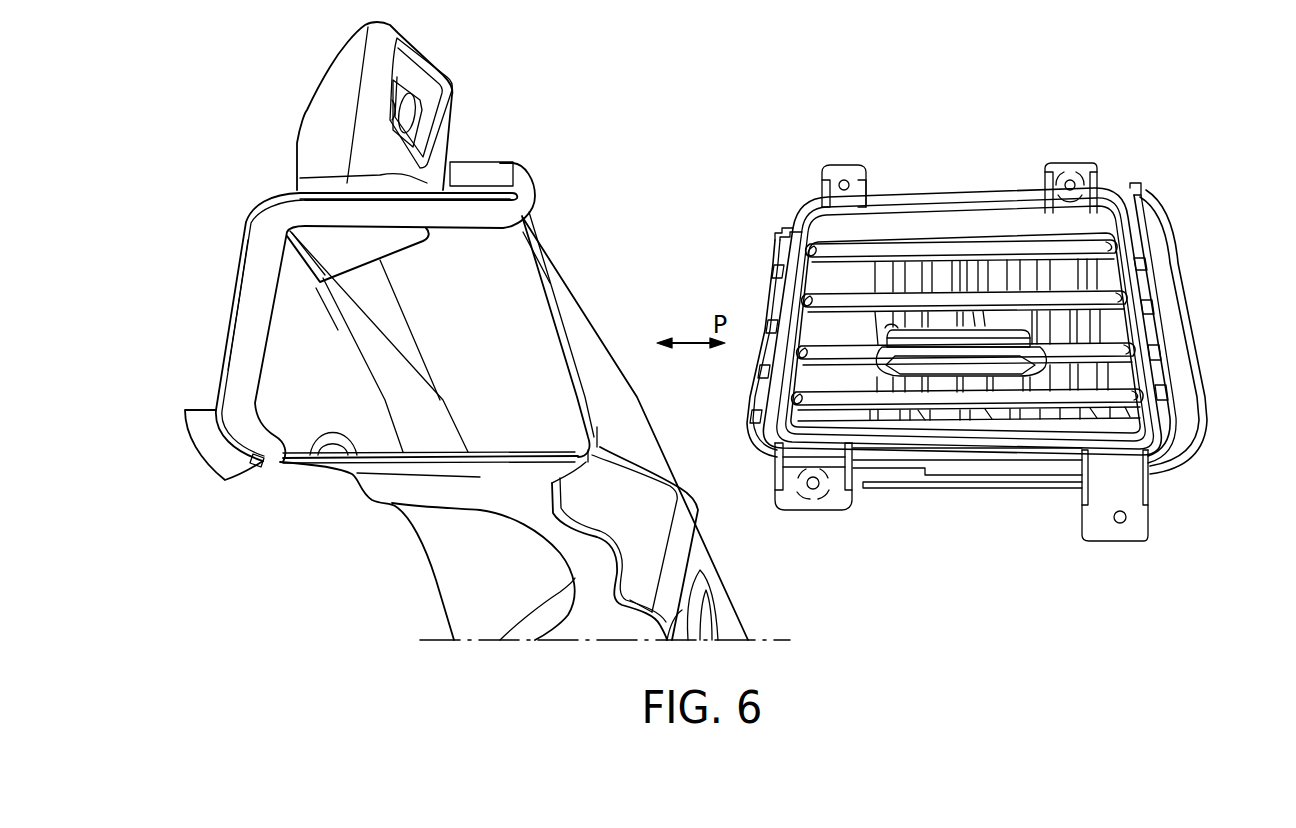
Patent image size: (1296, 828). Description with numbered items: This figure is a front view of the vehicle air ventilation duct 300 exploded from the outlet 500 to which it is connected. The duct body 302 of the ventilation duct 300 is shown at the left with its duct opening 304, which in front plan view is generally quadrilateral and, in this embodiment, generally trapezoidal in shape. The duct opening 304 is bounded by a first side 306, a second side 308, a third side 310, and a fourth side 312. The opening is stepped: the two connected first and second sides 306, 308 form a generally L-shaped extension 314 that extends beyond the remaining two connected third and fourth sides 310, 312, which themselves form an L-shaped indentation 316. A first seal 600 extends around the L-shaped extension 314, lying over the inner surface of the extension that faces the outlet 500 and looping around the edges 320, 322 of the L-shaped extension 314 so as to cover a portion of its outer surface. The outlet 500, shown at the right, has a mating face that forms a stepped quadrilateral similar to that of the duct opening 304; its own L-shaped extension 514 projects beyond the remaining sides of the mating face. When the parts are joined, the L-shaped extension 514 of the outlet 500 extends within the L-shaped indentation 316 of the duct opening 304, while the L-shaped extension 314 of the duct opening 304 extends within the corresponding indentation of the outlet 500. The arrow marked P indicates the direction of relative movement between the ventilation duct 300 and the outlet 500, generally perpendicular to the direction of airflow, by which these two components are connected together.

The vehicle air ventilation duct 300 is at (160, 412).
The duct body 302 is at (496, 580).
The duct opening 304 is at (404, 407).
The first side 306 is at (250, 304).
The second side 308 is at (334, 197).
The third side 310 is at (568, 305).
The fourth side 312 is at (437, 454).
The L-shaped extension 314 is at (251, 228).
The L-shaped indentation 316 is at (556, 256).
The edge 320 is at (545, 198).
The edge 322 is at (223, 483).
The first seal 600 is at (248, 343).
The outlet 500 is at (1199, 249).
The L-shaped extension 514 is at (1170, 446).